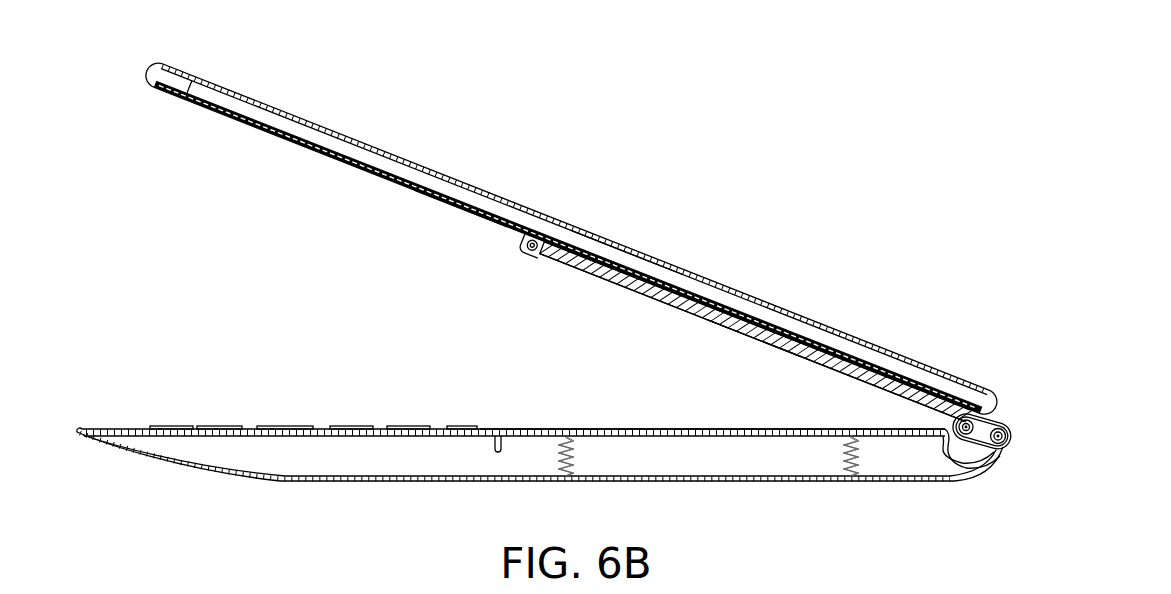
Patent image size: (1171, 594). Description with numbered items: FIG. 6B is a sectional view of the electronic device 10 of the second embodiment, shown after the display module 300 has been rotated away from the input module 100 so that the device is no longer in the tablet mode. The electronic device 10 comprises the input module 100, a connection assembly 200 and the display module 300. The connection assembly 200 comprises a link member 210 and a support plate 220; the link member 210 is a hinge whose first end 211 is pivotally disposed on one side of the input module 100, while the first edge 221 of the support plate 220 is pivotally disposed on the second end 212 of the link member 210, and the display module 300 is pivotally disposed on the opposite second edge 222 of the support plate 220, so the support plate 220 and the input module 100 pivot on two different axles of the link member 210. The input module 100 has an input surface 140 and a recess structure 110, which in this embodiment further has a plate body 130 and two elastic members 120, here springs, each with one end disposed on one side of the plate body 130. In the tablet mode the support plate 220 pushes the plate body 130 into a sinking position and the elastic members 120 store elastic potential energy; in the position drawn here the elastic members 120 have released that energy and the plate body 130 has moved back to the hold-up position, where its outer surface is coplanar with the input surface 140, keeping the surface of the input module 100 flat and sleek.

The electronic device 10 is at (881, 135).
The input module 100 is at (291, 482).
The recess structure 110 is at (540, 457).
The elastic member 120 is at (580, 455).
The plate body 130 is at (626, 427).
The input surface 140 is at (348, 426).
The connection assembly 200 is at (986, 419).
The link member 210 is at (984, 428).
The first end 211 is at (1012, 435).
The second end 212 is at (968, 418).
The support plate 220 is at (755, 331).
The first edge 221 is at (943, 422).
The second edge 222 is at (544, 256).
The display module 300 is at (571, 238).